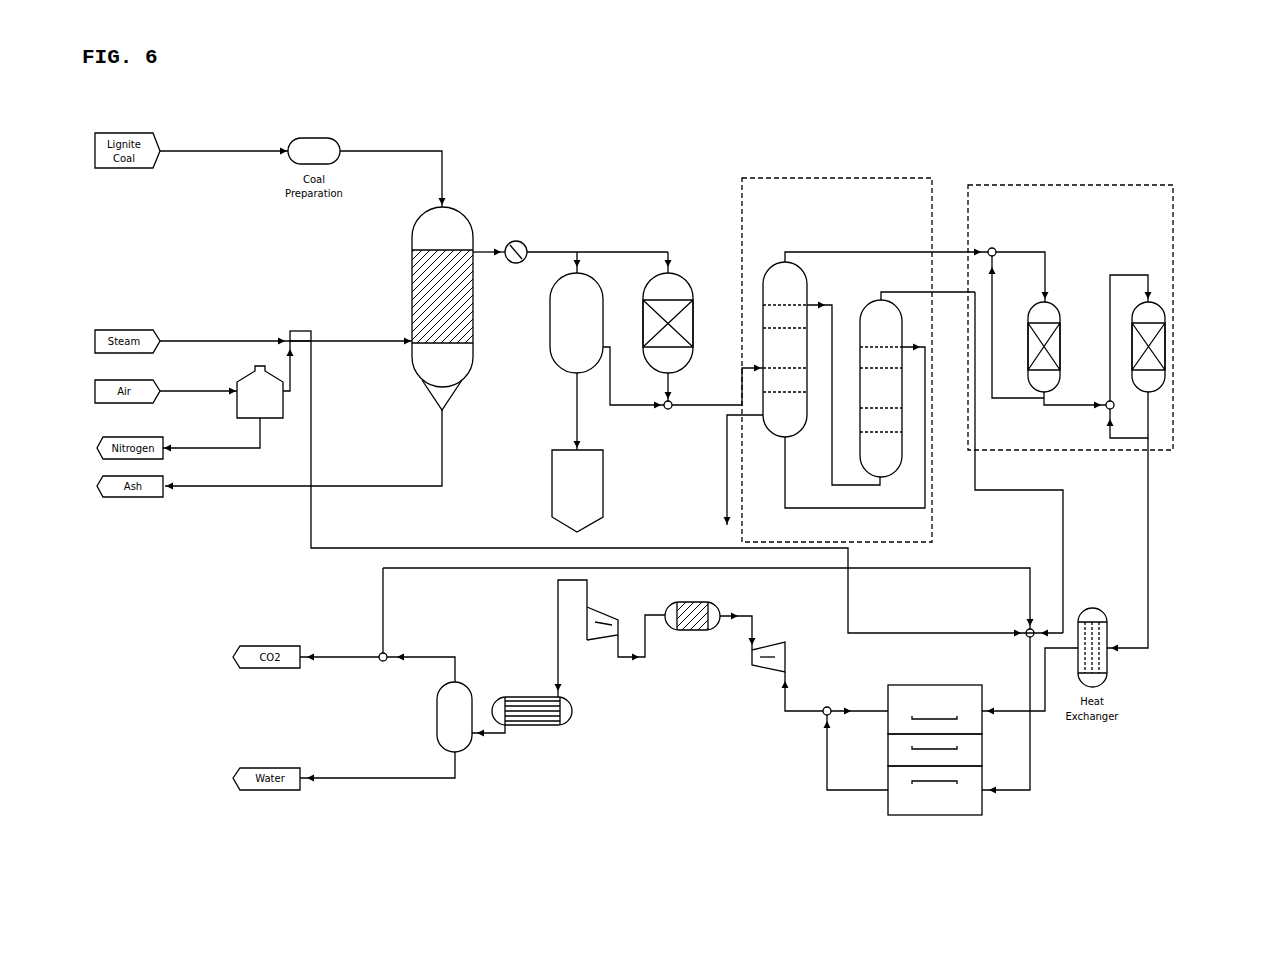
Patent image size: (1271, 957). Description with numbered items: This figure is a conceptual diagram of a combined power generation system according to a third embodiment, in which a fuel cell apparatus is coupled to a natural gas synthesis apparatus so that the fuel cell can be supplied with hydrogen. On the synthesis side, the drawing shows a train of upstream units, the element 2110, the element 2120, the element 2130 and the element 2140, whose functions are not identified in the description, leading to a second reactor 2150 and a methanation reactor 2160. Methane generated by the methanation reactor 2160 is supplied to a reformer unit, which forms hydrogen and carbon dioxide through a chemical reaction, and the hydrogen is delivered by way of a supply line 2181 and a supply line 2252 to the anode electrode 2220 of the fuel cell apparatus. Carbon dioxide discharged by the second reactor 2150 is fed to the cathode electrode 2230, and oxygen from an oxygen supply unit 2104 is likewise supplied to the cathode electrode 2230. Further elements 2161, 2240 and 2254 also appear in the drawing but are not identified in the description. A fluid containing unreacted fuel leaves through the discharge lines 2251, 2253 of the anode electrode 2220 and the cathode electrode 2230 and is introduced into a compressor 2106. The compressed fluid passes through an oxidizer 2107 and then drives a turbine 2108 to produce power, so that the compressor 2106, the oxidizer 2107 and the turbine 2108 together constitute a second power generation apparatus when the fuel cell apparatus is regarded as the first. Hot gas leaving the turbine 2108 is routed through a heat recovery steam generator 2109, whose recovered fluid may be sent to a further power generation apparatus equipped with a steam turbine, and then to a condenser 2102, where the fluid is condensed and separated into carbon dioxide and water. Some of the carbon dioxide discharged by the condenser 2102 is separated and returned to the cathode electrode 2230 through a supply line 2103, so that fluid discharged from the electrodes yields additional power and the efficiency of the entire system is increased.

The condenser 2102 is at (465, 747).
The supply line 2103 is at (977, 568).
The oxygen supply unit 2104 is at (272, 418).
The compressor 2106 is at (787, 650).
The oxidizer 2107 is at (692, 602).
The turbine 2108 is at (587, 642).
The heat recovery steam generator 2109 is at (548, 727).
The gasifier 2110 is at (449, 205).
The heat exchanger 2120 is at (516, 263).
The gas cooling unit 2130 is at (600, 283).
The shift conversion unit 2140 is at (686, 275).
The second reactor 2150 is at (836, 178).
The methanation reactor 2160 is at (1075, 185).
The rectisol product gas line 2161 is at (1063, 553).
The supply line 2181 is at (1150, 507).
The anode electrode 2220 is at (930, 690).
The cathode electrode 2230 is at (968, 802).
The electrolyte 2240 is at (900, 758).
The discharge line 2251 is at (862, 710).
The supply line 2252 is at (1045, 715).
The discharge line 2253 is at (838, 793).
The cathode inlet line from recycle 2254 is at (1035, 775).